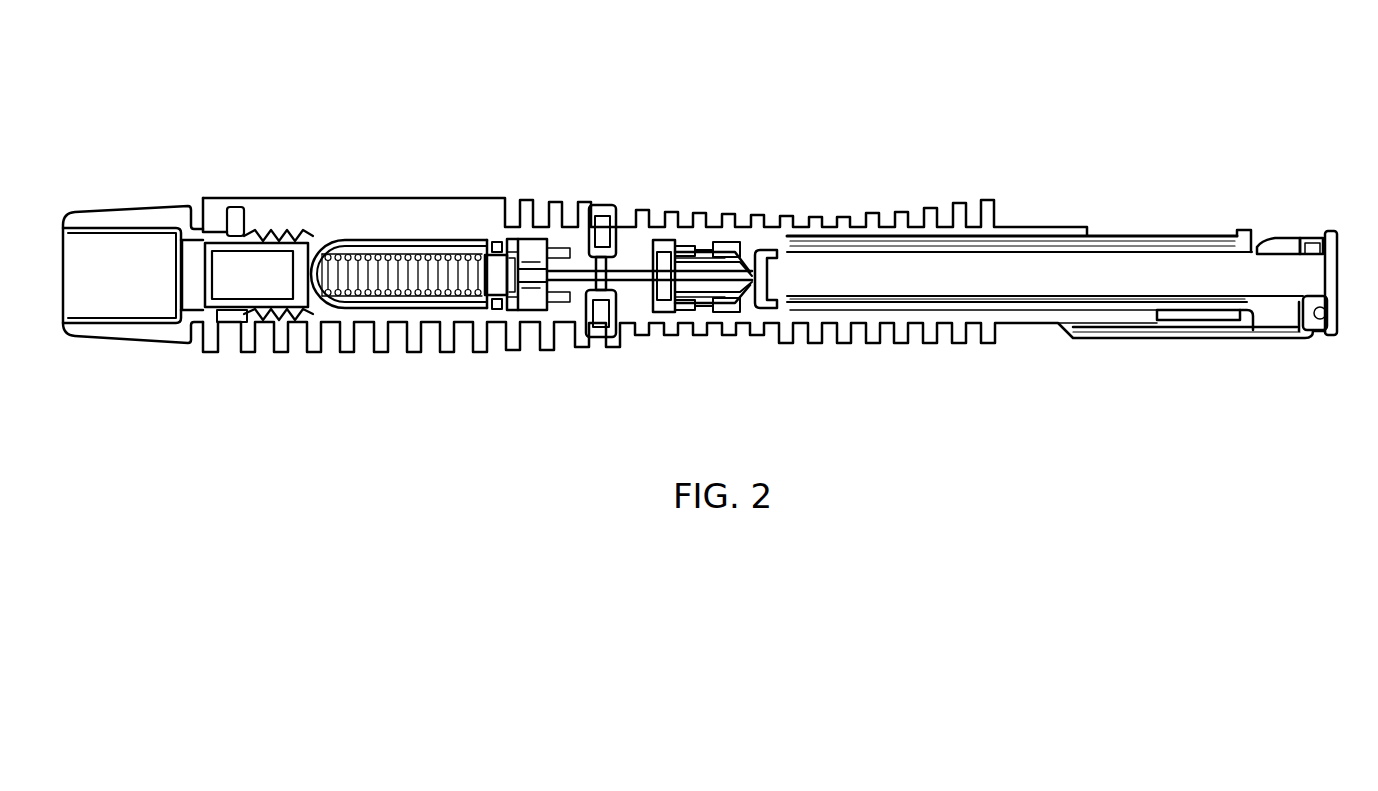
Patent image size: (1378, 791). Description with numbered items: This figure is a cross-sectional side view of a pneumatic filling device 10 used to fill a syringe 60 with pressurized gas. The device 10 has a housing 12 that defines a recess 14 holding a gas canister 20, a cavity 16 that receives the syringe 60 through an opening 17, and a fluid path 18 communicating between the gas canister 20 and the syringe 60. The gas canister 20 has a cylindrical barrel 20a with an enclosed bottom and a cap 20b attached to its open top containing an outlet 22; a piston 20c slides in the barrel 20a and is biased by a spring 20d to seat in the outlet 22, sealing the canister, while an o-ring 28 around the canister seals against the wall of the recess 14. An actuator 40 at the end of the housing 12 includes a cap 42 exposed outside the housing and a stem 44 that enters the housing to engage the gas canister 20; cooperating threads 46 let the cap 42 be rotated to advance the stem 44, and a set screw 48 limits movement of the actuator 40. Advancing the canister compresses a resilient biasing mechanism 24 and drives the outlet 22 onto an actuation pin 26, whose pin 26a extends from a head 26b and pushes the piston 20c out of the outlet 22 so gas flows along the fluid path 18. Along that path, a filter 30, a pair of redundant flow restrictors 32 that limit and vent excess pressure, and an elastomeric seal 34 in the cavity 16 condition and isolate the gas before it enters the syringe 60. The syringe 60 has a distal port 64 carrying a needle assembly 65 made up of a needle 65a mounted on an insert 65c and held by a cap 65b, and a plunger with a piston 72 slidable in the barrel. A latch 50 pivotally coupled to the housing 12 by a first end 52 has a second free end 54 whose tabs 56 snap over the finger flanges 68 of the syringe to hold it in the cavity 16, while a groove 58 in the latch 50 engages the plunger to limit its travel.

The pneumatic filling device 10 is at (763, 80).
The housing 12 is at (445, 195).
The recess 14 is at (445, 320).
The cavity 16 is at (750, 325).
The opening 17 is at (1090, 234).
The fluid path 18 is at (655, 240).
The gas canister 20 is at (405, 318).
The cylindrical barrel 20a is at (360, 313).
The cap 20b is at (494, 312).
The piston 20c is at (493, 247).
The spring 20d is at (378, 265).
The outlet 22 is at (519, 257).
The biasing mechanism 24 is at (528, 318).
The actuation pin 26 is at (540, 227).
The pin 26a is at (548, 312).
The head 26b is at (580, 315).
The o-ring 28 is at (513, 320).
The filter 30 is at (562, 245).
The flow restrictors 32 is at (600, 222).
The seal 34 is at (662, 247).
The actuator 40 is at (128, 200).
The cap 42 is at (118, 345).
The stem 44 is at (241, 342).
The threads 46 is at (287, 228).
The set screw 48 is at (236, 204).
The latch 50 is at (1206, 357).
The first end 52 is at (1082, 341).
The second free end 54 is at (1300, 341).
The tabs 56 is at (1264, 325).
The groove 58 is at (1333, 305).
The syringe 60 is at (1023, 287).
The distal port 64 is at (700, 302).
The needle assembly 65 is at (707, 253).
The needle 65a is at (662, 312).
The cap 65b is at (717, 307).
The insert 65c is at (753, 263).
The finger flanges 68 is at (1244, 231).
The piston 72 is at (768, 302).